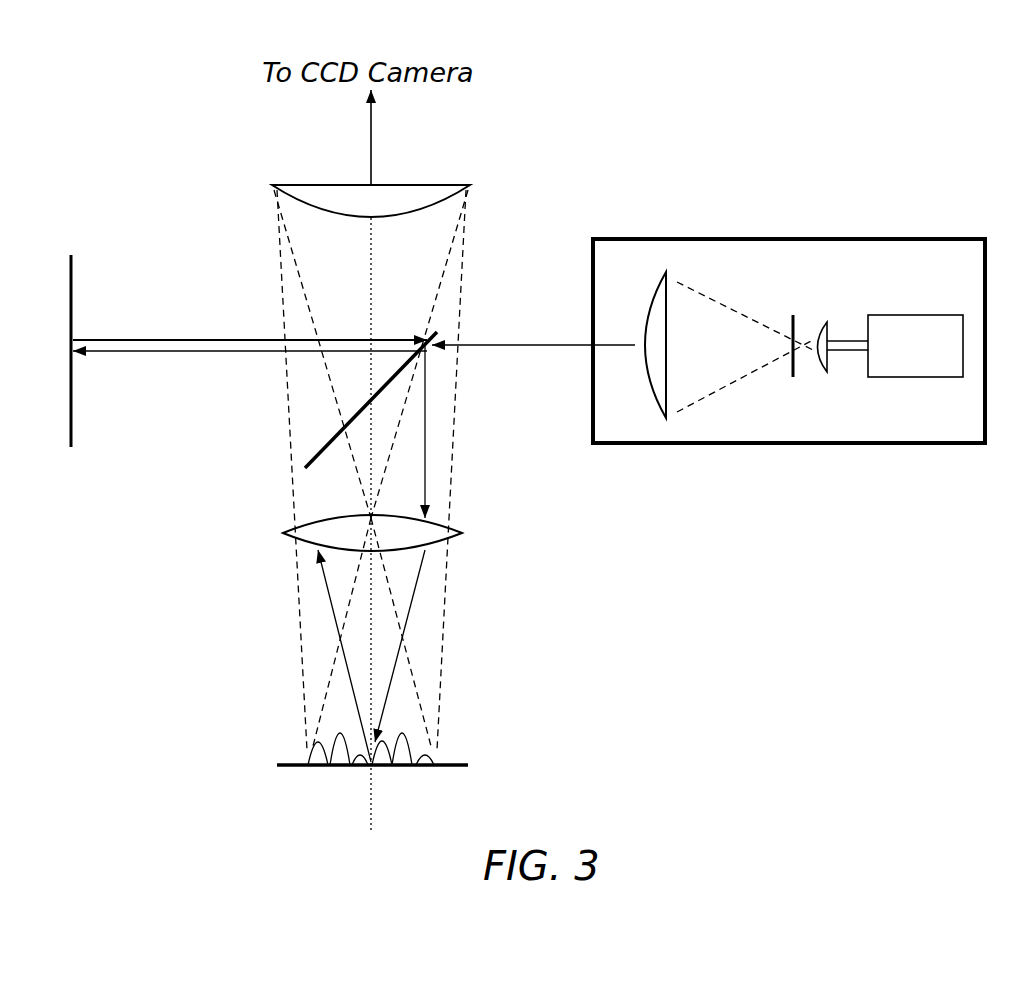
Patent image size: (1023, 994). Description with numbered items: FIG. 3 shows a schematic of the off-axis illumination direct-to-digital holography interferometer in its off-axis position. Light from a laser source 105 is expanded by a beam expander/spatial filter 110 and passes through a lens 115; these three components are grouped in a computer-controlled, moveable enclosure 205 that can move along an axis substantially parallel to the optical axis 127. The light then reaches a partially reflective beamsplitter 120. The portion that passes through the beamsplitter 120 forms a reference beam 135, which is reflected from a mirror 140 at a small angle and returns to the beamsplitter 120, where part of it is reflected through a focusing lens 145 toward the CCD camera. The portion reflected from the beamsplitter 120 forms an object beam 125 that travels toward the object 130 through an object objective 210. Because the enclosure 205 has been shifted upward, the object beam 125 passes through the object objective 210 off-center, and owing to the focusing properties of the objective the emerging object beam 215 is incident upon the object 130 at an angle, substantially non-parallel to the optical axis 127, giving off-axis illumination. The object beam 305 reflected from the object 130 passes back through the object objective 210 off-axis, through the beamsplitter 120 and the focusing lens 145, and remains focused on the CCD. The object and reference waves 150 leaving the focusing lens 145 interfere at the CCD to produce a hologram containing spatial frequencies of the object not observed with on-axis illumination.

The laser source 105 is at (935, 403).
The beam expander/spatial filter 110 is at (769, 381).
The lens 115 is at (638, 387).
The beamsplitter 120 is at (430, 400).
The object beam 125 is at (429, 480).
The optical axis 127 is at (451, 525).
The object 130 is at (359, 772).
The reference beam 135 is at (250, 320).
The mirror 140 is at (123, 365).
The focusing lens 145 is at (336, 215).
The object and reference waves 150 is at (374, 148).
The moveable enclosure 205 is at (789, 310).
The object objective 210 is at (409, 546).
The object beam 215 is at (450, 646).
The object beam reflected from the object 305 is at (299, 656).